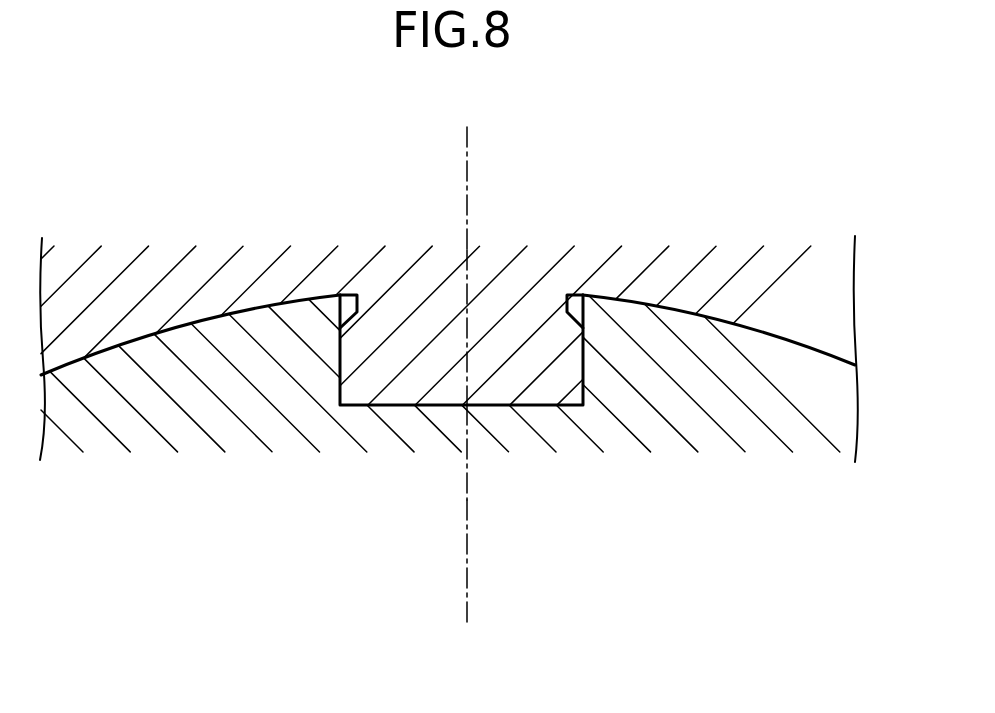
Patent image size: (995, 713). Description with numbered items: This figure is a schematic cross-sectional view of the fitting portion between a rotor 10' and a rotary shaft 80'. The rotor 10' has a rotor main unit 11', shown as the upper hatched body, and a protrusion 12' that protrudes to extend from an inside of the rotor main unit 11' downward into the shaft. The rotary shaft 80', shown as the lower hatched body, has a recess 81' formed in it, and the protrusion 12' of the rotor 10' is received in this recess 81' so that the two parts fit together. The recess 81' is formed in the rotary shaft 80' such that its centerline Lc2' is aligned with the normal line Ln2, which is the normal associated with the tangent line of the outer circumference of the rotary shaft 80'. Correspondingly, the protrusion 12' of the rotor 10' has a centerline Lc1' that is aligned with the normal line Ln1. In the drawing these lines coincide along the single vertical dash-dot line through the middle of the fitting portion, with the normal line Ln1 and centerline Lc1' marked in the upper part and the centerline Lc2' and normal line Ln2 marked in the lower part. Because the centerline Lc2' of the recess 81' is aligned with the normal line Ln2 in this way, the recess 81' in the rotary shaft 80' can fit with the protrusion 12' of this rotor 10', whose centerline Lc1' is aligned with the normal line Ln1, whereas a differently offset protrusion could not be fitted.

The rotor 10' is at (449, 312).
The rotor main unit 11' is at (448, 294).
The protrusion 12' is at (460, 300).
The rotary shaft 80' is at (440, 409).
The recess 81' is at (460, 411).
The normal line Ln1 is at (467, 170).
The normal line Ln2 is at (467, 600).
The centerline Lc1' is at (514, 291).
The centerline Lc2' is at (528, 464).